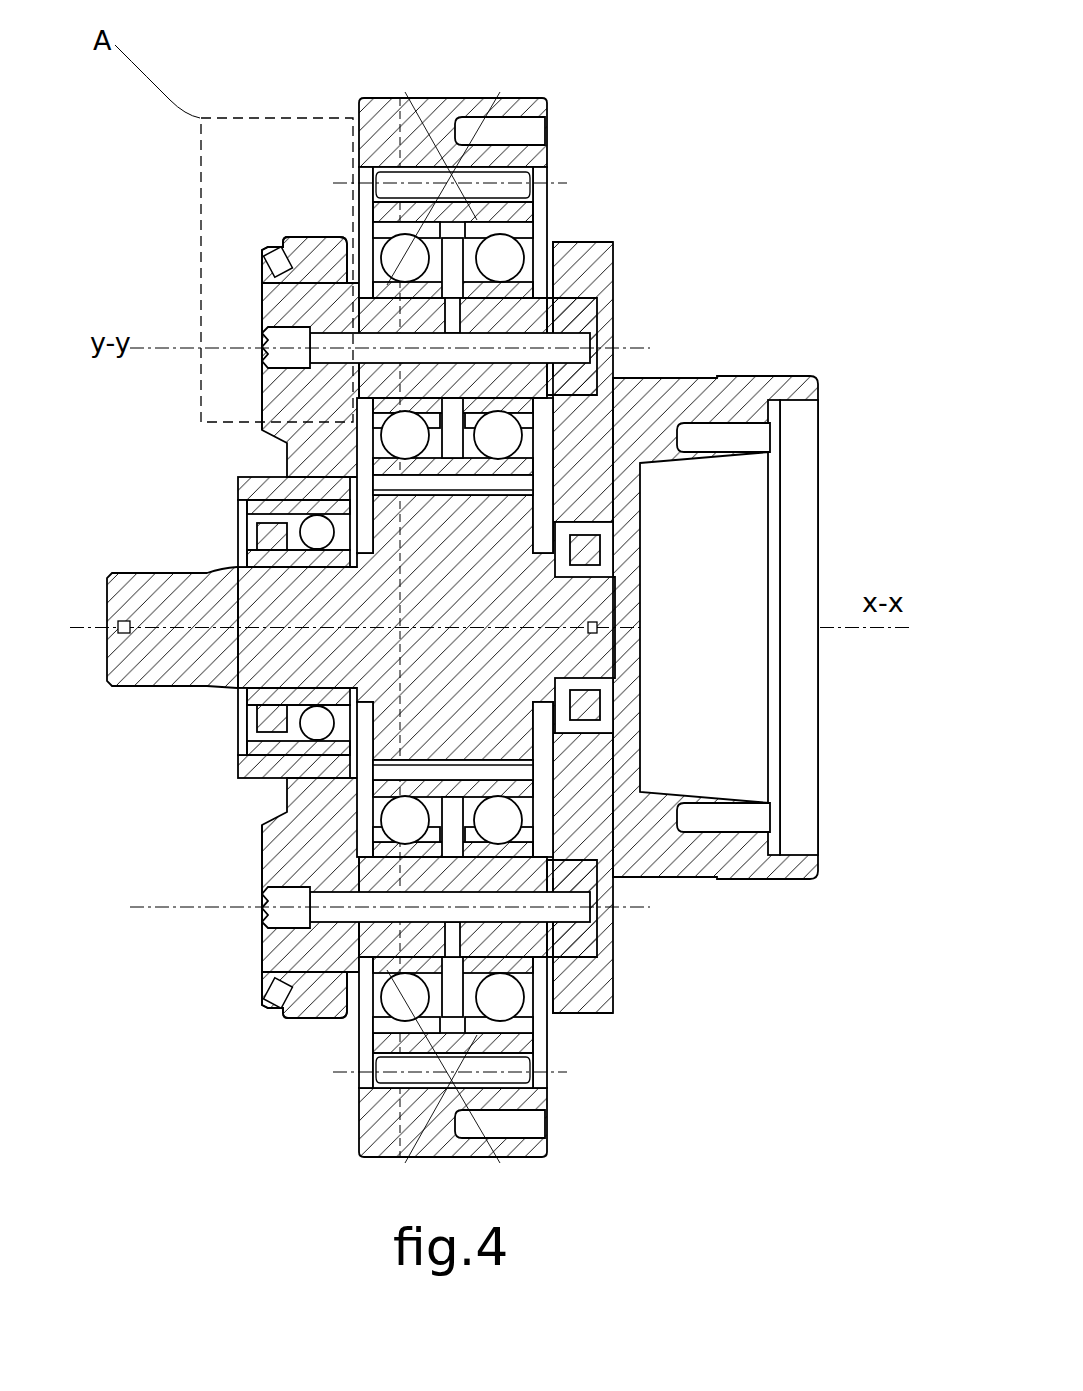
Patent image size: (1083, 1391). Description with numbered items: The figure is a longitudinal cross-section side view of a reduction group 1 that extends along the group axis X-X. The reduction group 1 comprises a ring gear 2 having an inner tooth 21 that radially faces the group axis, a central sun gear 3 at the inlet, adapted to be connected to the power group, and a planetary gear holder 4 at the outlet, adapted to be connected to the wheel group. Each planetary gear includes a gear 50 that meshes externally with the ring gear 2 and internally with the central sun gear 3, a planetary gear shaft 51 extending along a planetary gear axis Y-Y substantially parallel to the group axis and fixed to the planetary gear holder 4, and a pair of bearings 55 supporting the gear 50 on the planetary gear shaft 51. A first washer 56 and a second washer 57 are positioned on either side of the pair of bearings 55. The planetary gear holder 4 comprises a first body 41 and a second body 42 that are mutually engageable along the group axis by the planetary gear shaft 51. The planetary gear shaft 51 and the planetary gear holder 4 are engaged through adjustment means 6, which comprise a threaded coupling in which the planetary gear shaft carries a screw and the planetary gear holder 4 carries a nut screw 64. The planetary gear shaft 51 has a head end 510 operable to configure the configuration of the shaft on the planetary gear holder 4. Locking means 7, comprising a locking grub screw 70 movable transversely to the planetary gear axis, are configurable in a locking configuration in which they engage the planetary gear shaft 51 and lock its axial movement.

The reduction group 1 is at (172, 993).
The ring gear 2 is at (383, 112).
The inner tooth 21 is at (510, 177).
The central sun gear 3 is at (133, 597).
The planetary gear holder 4 is at (827, 888).
The first body 41 is at (322, 997).
The second body 42 is at (617, 1015).
The gear 50 is at (357, 205).
The planetary gear shaft 51 is at (600, 242).
The head end 510 is at (270, 377).
The pair of bearings 55 is at (363, 230).
The first washer 56 is at (293, 235).
The second washer 57 is at (553, 268).
The adjustment means 6 is at (262, 283).
The nut screw 64 is at (310, 627).
The locking means 7 is at (262, 258).
The locking grub screw 70 is at (304, 627).